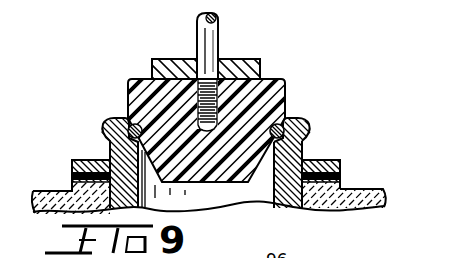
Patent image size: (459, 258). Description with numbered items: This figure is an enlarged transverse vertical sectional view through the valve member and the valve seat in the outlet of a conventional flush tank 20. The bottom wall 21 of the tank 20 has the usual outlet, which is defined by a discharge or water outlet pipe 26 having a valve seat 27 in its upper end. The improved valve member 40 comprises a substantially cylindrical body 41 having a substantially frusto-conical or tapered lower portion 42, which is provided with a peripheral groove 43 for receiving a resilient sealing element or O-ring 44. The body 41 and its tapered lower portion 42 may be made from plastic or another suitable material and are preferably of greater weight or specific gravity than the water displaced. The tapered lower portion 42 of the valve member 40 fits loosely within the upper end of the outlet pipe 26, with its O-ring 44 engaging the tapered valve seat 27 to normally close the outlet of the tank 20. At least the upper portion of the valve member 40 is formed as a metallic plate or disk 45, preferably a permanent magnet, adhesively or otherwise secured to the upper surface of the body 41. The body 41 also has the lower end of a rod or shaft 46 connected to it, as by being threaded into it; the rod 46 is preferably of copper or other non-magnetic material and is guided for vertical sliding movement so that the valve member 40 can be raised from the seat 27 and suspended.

The flush tank 20 is at (51, 177).
The bottom wall 21 is at (371, 190).
The discharge or water outlet pipe 26 is at (304, 156).
The valve seat 27 is at (298, 124).
The valve member 40 is at (288, 74).
The cylindrical body 41 is at (287, 90).
The frusto-conical lower portion 42 is at (258, 178).
The peripheral groove 43 is at (270, 136).
The O-ring 44 is at (138, 126).
The metallic plate or disk 45 is at (241, 58).
The rod or shaft 46 is at (219, 24).